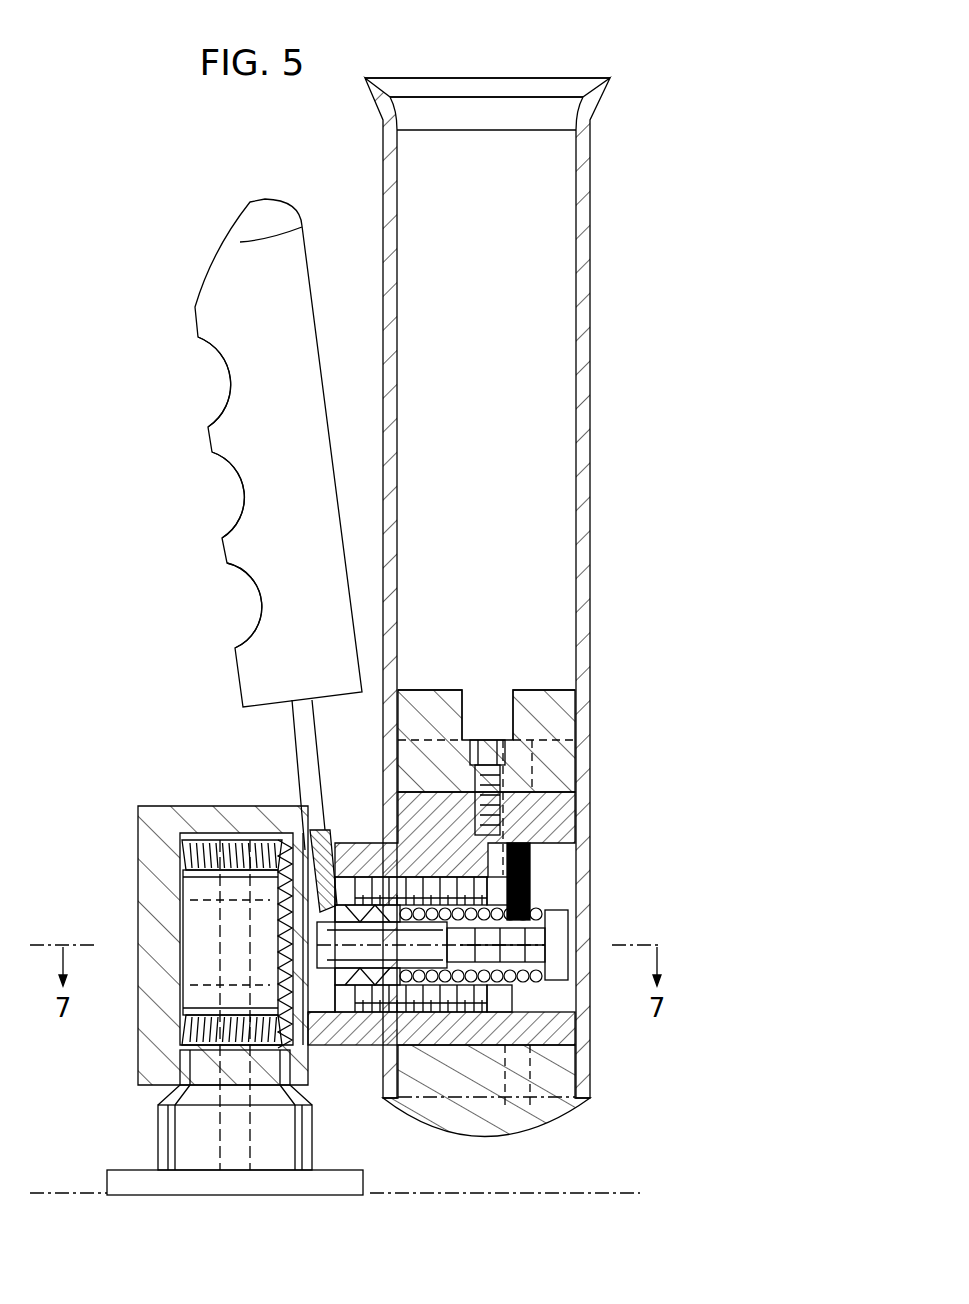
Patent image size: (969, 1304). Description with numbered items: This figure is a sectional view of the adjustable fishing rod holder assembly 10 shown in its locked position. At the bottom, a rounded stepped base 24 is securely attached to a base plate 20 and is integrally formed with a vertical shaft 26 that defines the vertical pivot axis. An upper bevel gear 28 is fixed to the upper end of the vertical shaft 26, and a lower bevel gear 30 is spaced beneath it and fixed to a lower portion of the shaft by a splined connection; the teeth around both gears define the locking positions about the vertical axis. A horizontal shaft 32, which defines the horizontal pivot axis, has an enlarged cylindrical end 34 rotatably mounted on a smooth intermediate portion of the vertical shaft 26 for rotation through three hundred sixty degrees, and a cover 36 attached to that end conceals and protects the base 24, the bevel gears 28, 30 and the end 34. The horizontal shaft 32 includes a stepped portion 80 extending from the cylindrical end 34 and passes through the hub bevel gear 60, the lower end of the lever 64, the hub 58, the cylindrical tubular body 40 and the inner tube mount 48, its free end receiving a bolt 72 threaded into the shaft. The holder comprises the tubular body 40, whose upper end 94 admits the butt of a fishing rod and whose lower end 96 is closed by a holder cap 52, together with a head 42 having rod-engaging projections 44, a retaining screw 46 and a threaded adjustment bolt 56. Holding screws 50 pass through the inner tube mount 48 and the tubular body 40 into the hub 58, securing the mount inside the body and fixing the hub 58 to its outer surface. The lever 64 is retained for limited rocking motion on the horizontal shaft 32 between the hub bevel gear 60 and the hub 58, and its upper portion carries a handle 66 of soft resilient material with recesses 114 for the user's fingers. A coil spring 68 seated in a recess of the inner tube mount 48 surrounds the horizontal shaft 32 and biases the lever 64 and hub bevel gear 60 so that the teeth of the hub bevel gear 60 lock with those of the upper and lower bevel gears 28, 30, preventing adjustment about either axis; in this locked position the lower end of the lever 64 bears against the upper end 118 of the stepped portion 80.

The ratchet tool assembly 10 is at (637, 223).
The base plate 20 is at (285, 1186).
The rounded stepped base 24 is at (170, 1131).
The vertical shaft 26 is at (265, 945).
The upper bevel gear 28 is at (180, 808).
The lower bevel gear 30 is at (185, 1060).
The horizontal shaft 32 is at (360, 940).
The enlarged cylindrical end 34 is at (215, 932).
The cover 36 is at (200, 848).
The cylindrical tubular body 40 is at (590, 382).
The head 42 is at (565, 766).
The rod-engaging projections 44 is at (425, 695).
The retaining screw 46 is at (487, 750).
The inner tube mount 48 is at (420, 823).
The holding screws 50 is at (500, 890).
The holder cap 52 is at (473, 1130).
The threaded adjustment bolt 56 is at (530, 858).
The hub 58 is at (352, 1046).
The hub bevel gear 60 is at (310, 856).
The lever 64 is at (298, 712).
The handle 66 is at (298, 342).
The coil spring 68 is at (580, 1060).
The bolt 72 is at (553, 948).
The stepped portion 80 is at (325, 1046).
The upper end 94 is at (582, 96).
The lower end 96 is at (585, 1082).
The recesses 114 is at (230, 262).
The upper end 118 is at (295, 895).